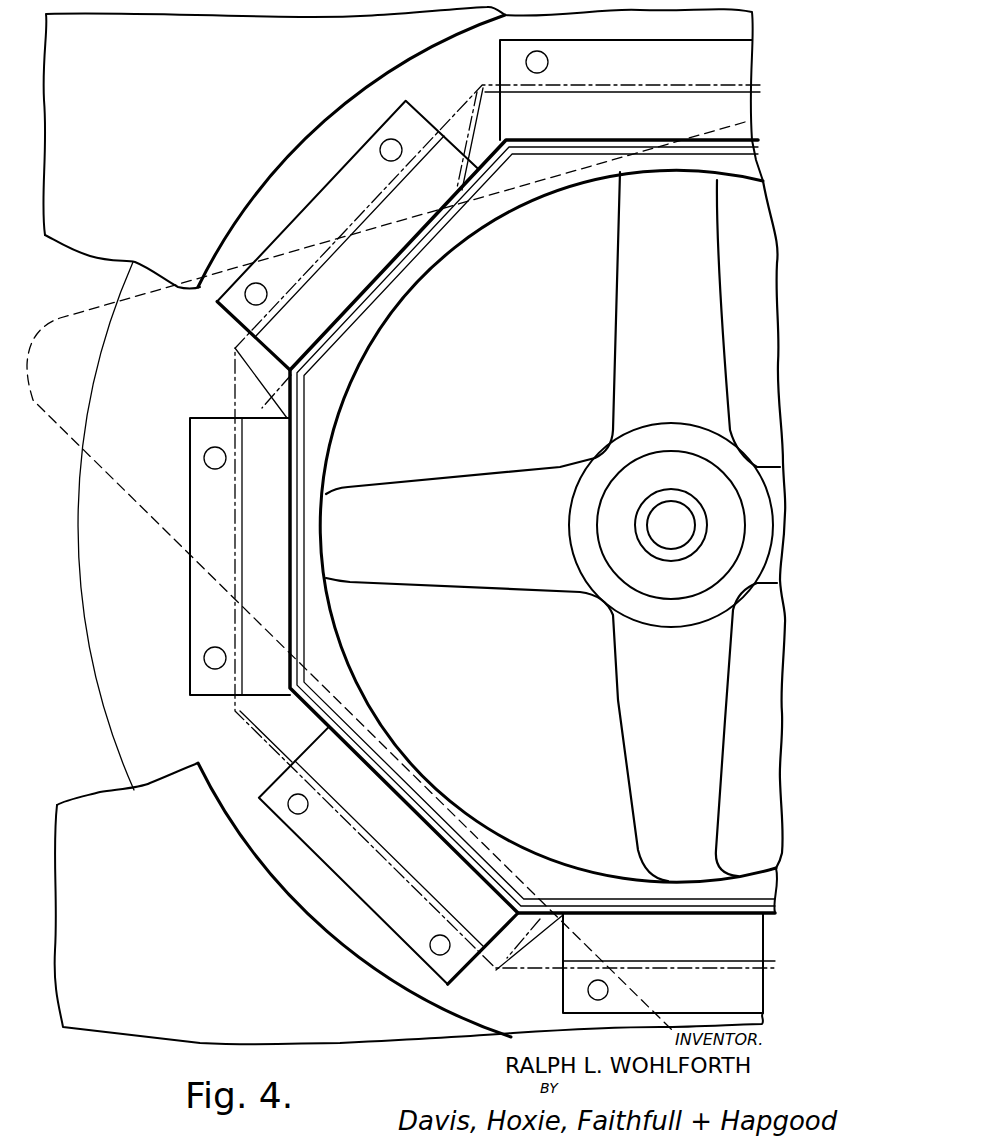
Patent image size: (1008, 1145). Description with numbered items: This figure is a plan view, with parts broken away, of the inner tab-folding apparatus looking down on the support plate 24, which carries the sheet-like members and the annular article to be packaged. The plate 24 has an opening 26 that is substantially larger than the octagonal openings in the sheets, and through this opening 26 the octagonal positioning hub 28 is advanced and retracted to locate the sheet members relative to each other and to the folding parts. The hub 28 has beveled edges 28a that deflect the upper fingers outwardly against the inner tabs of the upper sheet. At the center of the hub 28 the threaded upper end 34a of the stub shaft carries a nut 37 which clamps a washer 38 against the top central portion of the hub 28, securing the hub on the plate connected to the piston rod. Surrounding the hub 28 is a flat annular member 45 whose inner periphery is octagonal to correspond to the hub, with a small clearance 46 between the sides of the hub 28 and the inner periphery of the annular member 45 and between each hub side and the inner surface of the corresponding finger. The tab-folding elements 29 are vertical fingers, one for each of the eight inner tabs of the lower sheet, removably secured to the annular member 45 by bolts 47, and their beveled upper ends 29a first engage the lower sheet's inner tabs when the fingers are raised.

The plate 24 is at (78, 225).
The opening 26 is at (279, 186).
The positioning hub 28 is at (355, 340).
The beveled edges 28a is at (407, 267).
The tab-folding elements 29 is at (713, 112).
The beveled upper ends 29a is at (253, 628).
The threaded upper end 34a is at (667, 510).
The nut 37 is at (642, 527).
The washer 38 is at (633, 565).
The annular member 45 is at (100, 607).
The clearance 46 is at (330, 693).
The bolts 47 is at (382, 145).